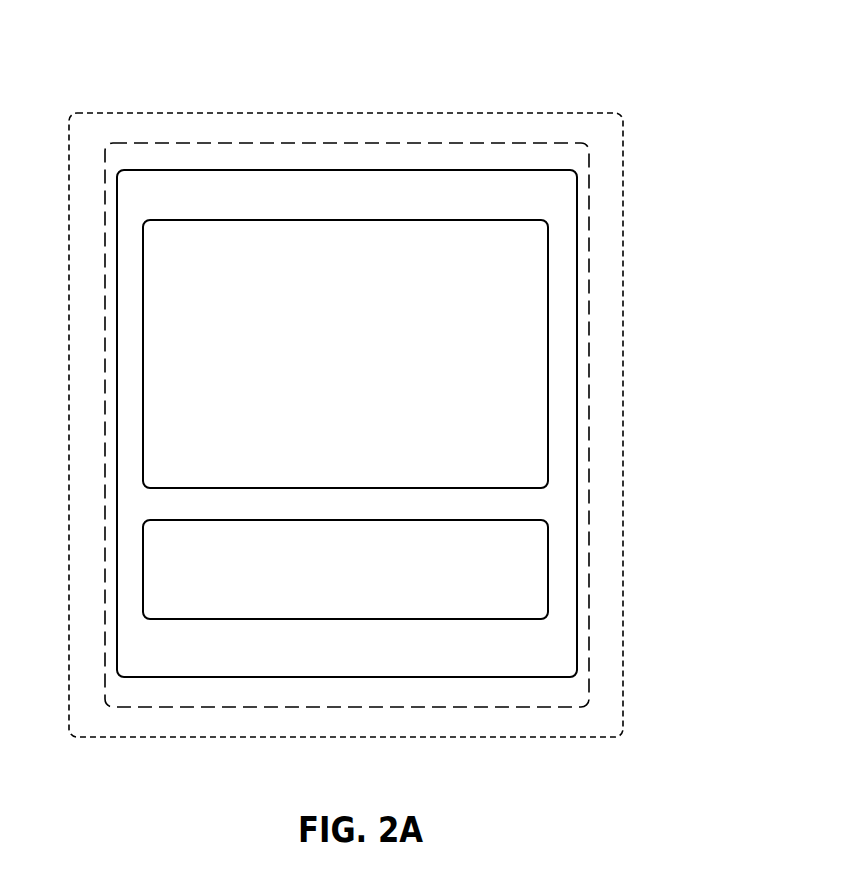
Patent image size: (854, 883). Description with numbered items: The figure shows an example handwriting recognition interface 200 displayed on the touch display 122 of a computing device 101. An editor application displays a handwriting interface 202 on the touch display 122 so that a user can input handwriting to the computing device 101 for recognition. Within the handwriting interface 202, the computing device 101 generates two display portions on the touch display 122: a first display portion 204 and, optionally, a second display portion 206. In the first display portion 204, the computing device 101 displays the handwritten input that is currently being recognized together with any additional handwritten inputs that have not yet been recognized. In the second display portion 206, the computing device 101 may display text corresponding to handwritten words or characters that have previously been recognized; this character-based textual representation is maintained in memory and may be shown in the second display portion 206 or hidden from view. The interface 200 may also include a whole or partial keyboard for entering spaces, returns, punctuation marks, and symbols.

The handwriting interface 200 is at (530, 73).
The computing device 101 is at (91, 112).
The touch display 122 is at (195, 142).
The handwriting interface 202 is at (332, 169).
The first display portion 204 is at (549, 307).
The second display portion 206 is at (549, 576).